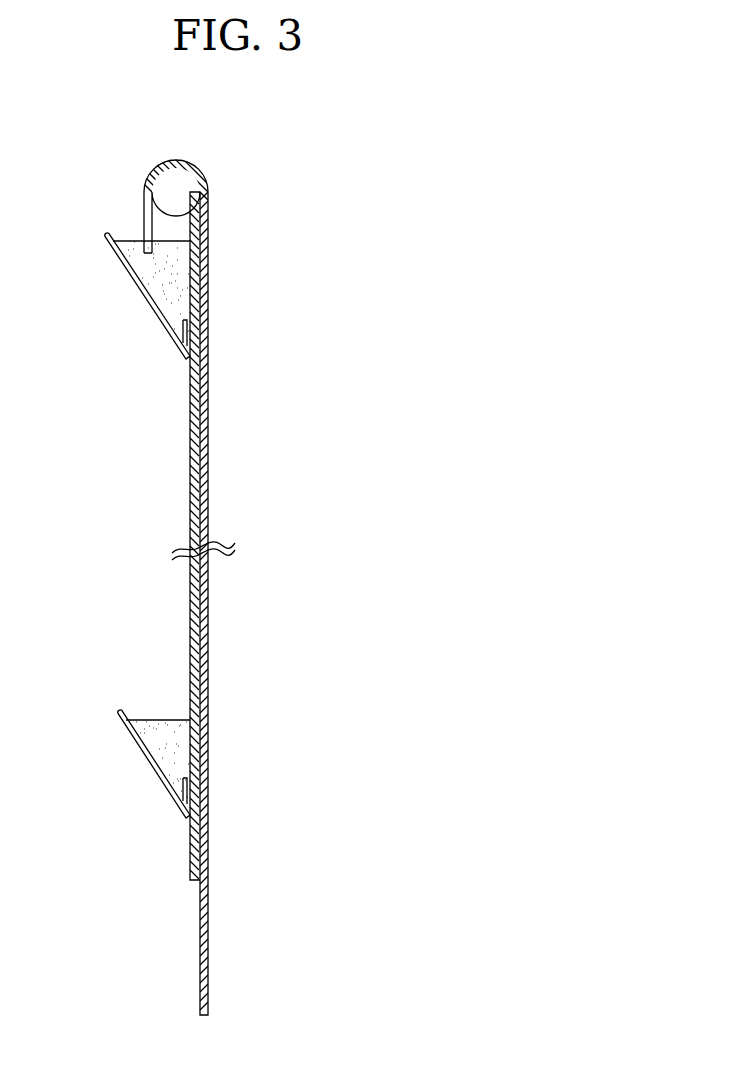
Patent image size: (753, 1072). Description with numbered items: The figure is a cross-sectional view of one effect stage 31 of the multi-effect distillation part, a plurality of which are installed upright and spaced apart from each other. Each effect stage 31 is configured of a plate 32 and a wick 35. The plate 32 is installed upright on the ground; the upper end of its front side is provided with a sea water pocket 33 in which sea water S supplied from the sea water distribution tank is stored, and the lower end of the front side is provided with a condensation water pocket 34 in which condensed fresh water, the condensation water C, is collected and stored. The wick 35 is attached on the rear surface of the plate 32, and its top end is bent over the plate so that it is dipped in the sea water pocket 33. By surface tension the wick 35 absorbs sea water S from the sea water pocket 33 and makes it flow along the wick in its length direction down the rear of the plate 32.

The effect stage 31 is at (294, 196).
The plate 32 is at (190, 455).
The sea water pocket 33 is at (117, 257).
The condensation water pocket 34 is at (152, 763).
The wick 35 is at (207, 433).
The sea water S is at (158, 282).
The condensation water C is at (150, 730).